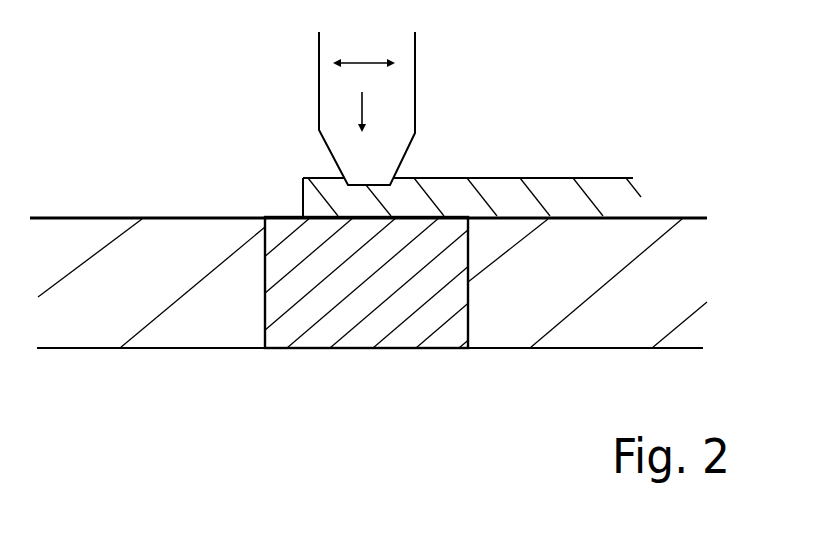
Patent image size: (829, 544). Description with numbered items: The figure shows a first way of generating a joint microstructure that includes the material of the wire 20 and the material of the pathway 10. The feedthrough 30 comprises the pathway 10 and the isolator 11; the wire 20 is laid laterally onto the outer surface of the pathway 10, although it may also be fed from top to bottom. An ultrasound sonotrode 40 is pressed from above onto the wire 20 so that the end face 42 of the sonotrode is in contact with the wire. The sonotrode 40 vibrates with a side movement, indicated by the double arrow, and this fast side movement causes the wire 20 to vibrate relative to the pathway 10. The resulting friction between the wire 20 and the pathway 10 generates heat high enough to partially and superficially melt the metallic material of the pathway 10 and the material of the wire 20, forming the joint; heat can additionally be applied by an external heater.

The pathway 10 is at (383, 323).
The isolator 11 is at (217, 305).
The wire 20 is at (558, 197).
The feedthrough 30 is at (245, 177).
The ultrasound sonotrode 40 is at (332, 80).
The end face 42 is at (368, 185).